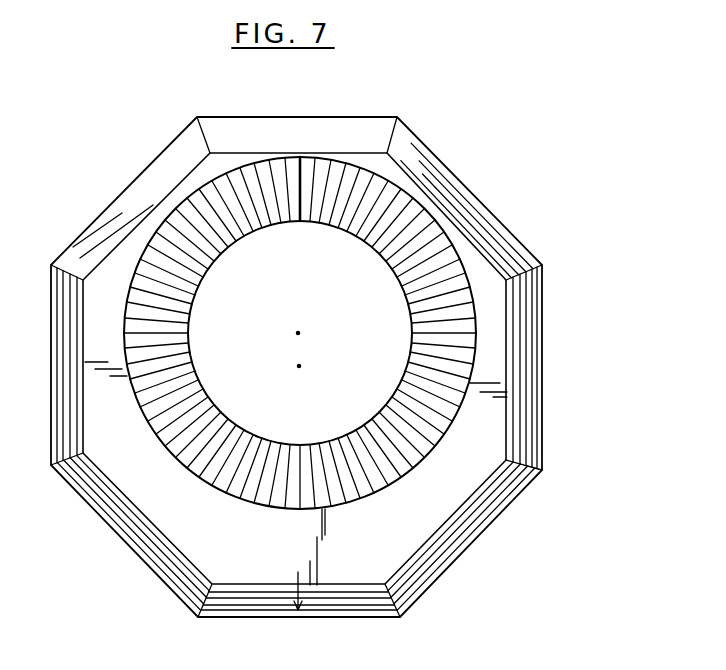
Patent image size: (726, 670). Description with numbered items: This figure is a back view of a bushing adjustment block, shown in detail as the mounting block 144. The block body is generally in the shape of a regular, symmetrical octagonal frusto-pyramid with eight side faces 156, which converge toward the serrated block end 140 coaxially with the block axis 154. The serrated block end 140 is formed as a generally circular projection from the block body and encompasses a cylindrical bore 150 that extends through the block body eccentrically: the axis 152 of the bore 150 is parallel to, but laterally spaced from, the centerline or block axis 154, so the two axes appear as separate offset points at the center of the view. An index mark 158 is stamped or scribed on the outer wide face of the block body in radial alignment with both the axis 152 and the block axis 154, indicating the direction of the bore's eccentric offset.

The serrated block end 140 is at (428, 462).
The mounting block 144 is at (496, 190).
The cylindrical bore 150 is at (383, 413).
The axis of bore 152 is at (298, 333).
The block axis 154 is at (299, 366).
The side faces 156 is at (410, 142).
The index mark 158 is at (293, 572).